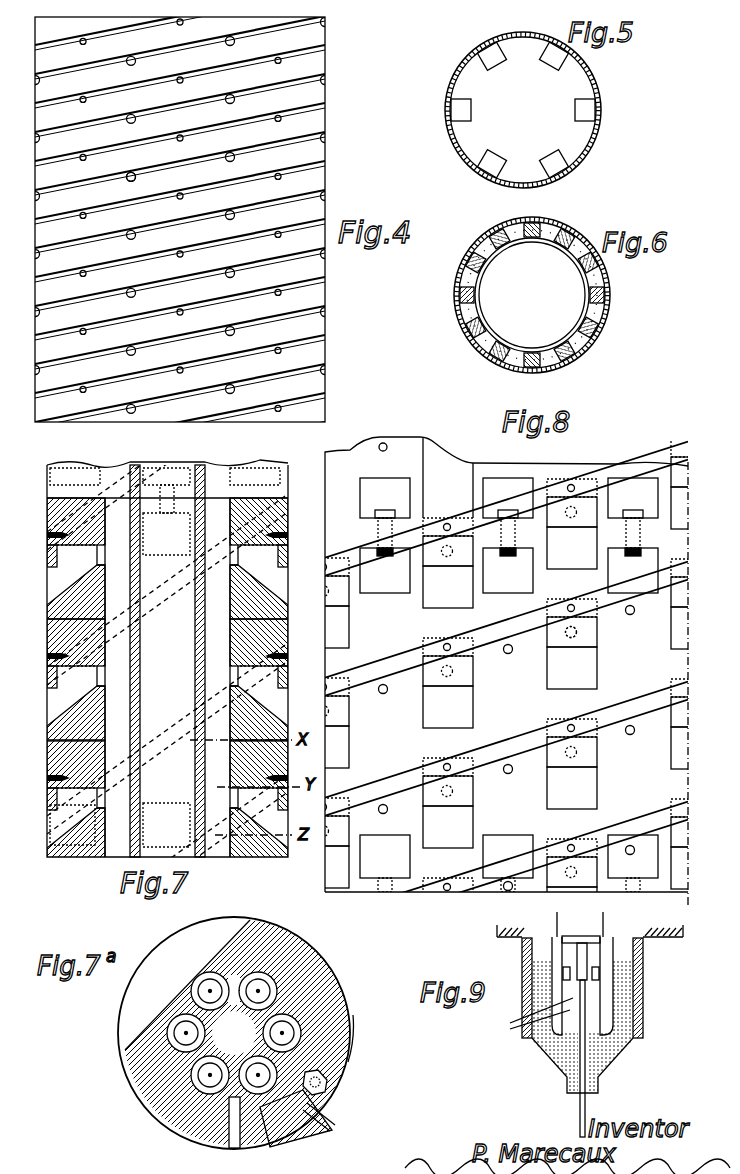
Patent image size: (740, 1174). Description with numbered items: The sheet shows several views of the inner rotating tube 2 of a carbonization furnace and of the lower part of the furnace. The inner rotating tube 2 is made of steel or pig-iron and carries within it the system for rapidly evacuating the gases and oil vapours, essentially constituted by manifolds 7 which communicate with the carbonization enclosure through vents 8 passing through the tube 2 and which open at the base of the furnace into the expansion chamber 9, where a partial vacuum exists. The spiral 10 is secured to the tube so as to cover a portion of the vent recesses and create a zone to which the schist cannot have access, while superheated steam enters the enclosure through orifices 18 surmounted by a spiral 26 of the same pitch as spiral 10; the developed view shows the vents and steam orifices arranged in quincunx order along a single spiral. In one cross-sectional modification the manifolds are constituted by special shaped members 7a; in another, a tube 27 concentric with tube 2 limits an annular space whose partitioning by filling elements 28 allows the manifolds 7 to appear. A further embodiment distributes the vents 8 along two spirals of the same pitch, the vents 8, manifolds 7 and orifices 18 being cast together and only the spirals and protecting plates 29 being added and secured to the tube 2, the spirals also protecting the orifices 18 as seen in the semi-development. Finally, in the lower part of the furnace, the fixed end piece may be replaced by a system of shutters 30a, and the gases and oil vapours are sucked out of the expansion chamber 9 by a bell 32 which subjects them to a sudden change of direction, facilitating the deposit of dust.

In FIG. 5, the inner rotating tube 2 is at (594, 150).
In FIG. 6, the inner rotating tube 2 is at (600, 339).
In FIG. 7, the inner rotating tube 2 is at (167, 661).
In FIG. 8, the inner rotating tube 2 is at (506, 676).
In FIG. 7A, the inner rotating tube 2 is at (338, 1083).
In FIG. 9, the inner rotating tube 2 is at (611, 937).
In FIG. 6, the manifolds 7 is at (465, 283).
In FIG. 7, the manifolds 7 is at (165, 661).
In FIG. 7A, the manifolds 7 is at (191, 1036).
In FIG. 5, the special shaped members 7a is at (545, 153).
In FIG. 4, the vents 8 is at (131, 173).
In FIG. 7, the vents 8 is at (100, 681).
In FIG. 8, the vents 8 is at (578, 632).
In FIG. 7A, the vents 8 is at (262, 1099).
In FIG. 9, the expansion chamber 9 is at (560, 1057).
In FIG. 4, the spiral 10 is at (297, 75).
In FIG. 7, the spiral 10 is at (38, 667).
In FIG. 8, the spiral 10 is at (353, 565).
In FIG. 7A, the spiral 10 is at (336, 1125).
In FIG. 4, the orifices 18 is at (80, 161).
In FIG. 8, the orifices 18 is at (512, 652).
In FIG. 7A, the orifices 18 is at (233, 1097).
In FIG. 4, the spiral 26 is at (62, 98).
In FIG. 6, the tube 27 is at (480, 306).
In FIG. 6, the filling elements 28 is at (470, 331).
In FIG. 7, the protecting plates 29 is at (56, 835).
In FIG. 8, the protecting plates 29 is at (465, 673).
In FIG. 9, the shutters 30a is at (548, 970).
In FIG. 9, the bell 32 is at (600, 1008).